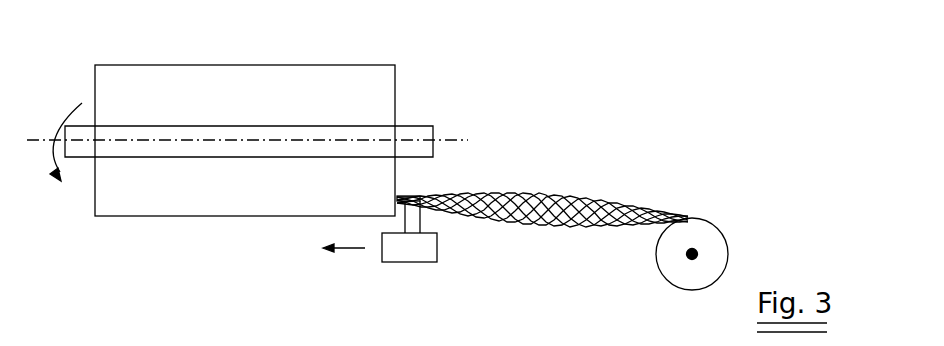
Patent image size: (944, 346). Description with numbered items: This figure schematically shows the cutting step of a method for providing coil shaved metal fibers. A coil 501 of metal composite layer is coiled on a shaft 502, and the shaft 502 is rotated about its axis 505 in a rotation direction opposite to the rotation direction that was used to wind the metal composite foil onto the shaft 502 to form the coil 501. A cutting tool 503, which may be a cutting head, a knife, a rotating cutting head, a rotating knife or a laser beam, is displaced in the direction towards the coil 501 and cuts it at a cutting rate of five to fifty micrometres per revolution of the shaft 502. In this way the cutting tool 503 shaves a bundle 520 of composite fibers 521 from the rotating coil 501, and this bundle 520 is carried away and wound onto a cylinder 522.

The coil 501 is at (258, 107).
The shaft 502 is at (412, 134).
The axis 505 is at (452, 140).
The cutting tool 503 is at (423, 253).
The bundle 520 is at (530, 180).
The composite fibers 521 is at (615, 202).
The cylinder 522 is at (700, 228).